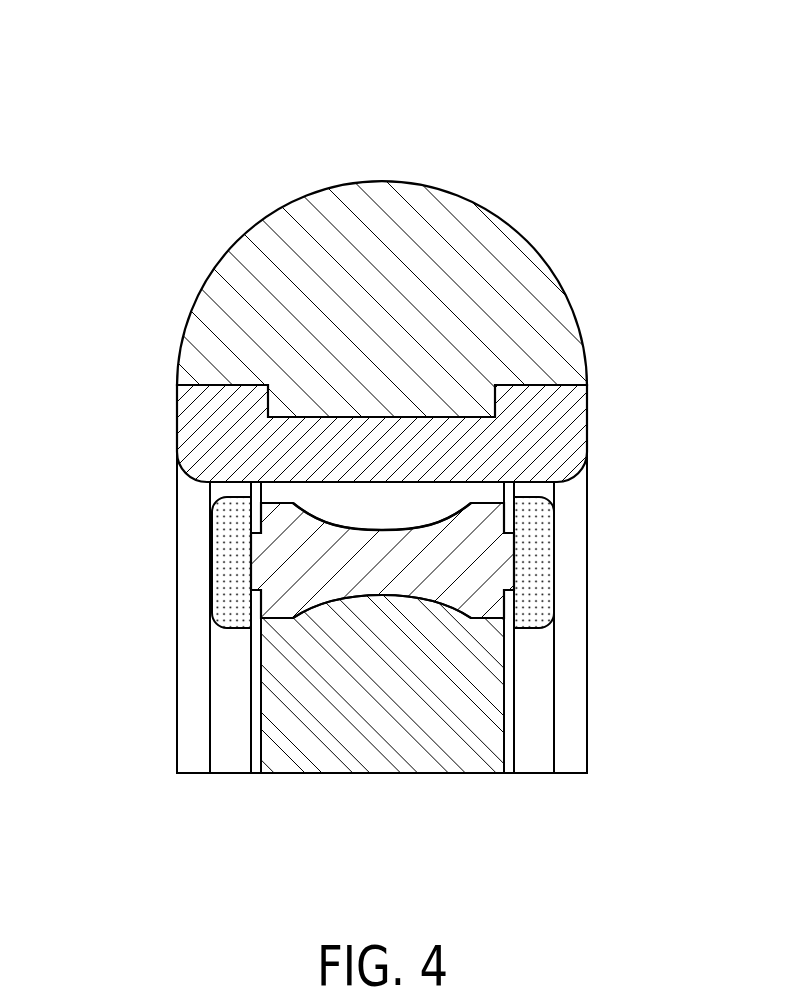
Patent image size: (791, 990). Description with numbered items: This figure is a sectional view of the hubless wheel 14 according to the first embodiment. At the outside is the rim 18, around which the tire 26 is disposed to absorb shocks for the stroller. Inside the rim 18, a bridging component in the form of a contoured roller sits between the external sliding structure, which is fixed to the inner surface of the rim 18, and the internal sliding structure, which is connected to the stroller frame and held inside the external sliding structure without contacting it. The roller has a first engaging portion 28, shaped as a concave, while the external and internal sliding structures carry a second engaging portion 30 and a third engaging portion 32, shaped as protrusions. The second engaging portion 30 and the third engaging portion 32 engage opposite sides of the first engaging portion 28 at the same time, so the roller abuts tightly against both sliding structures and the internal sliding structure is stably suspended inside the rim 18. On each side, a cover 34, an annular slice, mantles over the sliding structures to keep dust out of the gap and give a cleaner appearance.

The hubless wheel 14 is at (616, 76).
The rim 18 is at (559, 424).
The tire 26 is at (380, 223).
The first engaging portion 28 is at (402, 588).
The second engaging portion 30 is at (365, 523).
The third engaging portion 32 is at (373, 603).
The cover 34 is at (232, 560).